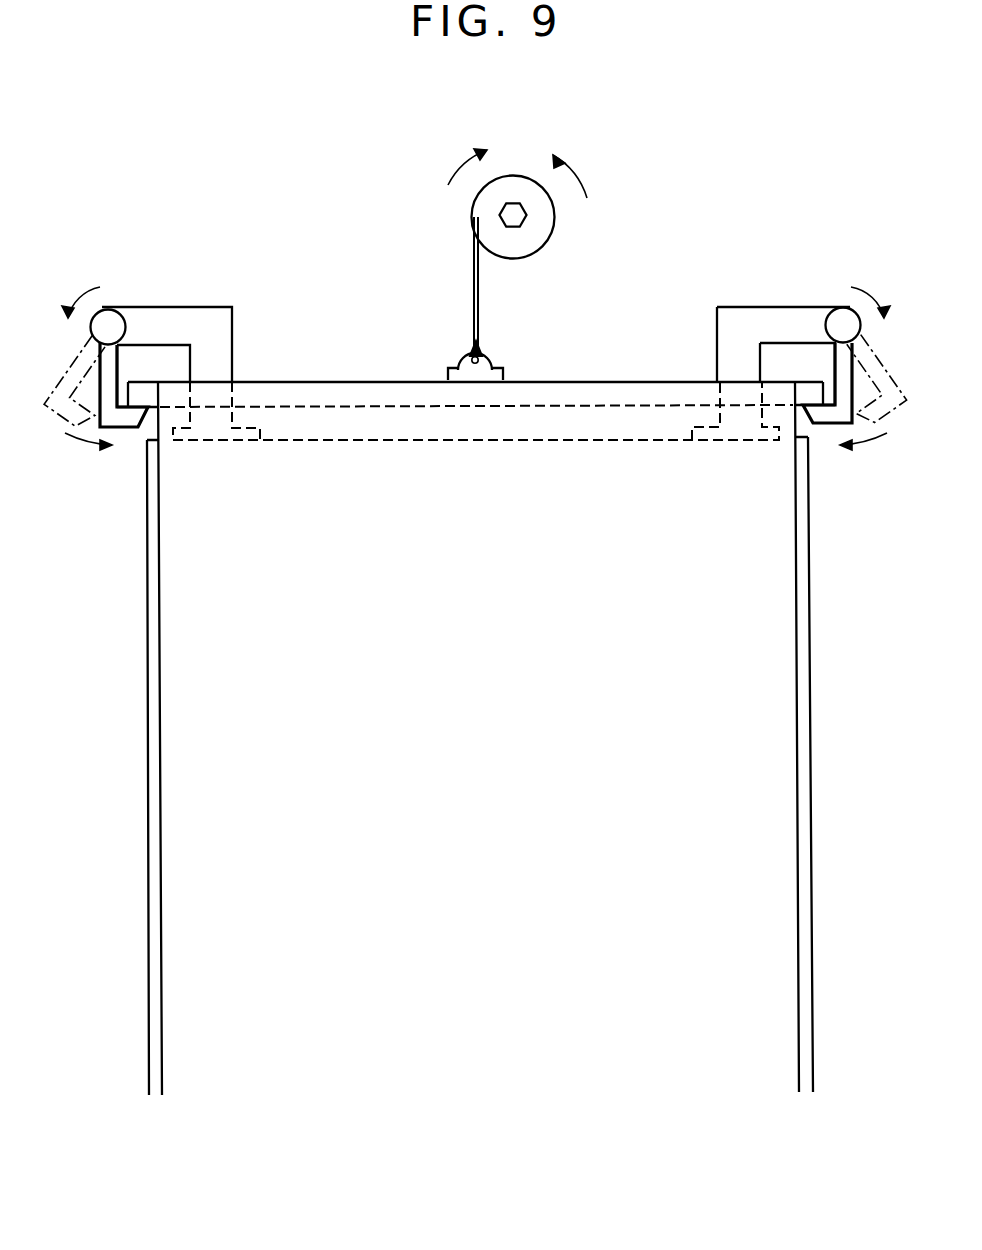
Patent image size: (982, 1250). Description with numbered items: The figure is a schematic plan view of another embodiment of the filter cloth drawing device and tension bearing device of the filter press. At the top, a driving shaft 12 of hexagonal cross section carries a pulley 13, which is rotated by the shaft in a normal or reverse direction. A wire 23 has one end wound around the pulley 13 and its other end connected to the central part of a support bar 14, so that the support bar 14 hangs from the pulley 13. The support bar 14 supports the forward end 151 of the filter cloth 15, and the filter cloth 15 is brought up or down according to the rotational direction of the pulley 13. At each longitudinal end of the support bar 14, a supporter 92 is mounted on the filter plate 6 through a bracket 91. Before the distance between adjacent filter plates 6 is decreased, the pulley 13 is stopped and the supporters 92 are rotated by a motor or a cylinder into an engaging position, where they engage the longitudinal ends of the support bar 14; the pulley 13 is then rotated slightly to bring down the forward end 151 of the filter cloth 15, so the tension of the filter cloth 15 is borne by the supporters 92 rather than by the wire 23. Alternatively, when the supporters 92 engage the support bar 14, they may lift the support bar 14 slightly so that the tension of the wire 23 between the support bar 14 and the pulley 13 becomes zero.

The filter plate 6 is at (146, 583).
The driving shaft 12 is at (524, 217).
The pulley 13 is at (523, 254).
The support bar 14 is at (143, 357).
The filter cloth 15 is at (172, 422).
The wire 23 is at (474, 298).
The bracket 91 is at (220, 307).
The supporter 92 is at (127, 427).
The forward end 151 is at (620, 382).